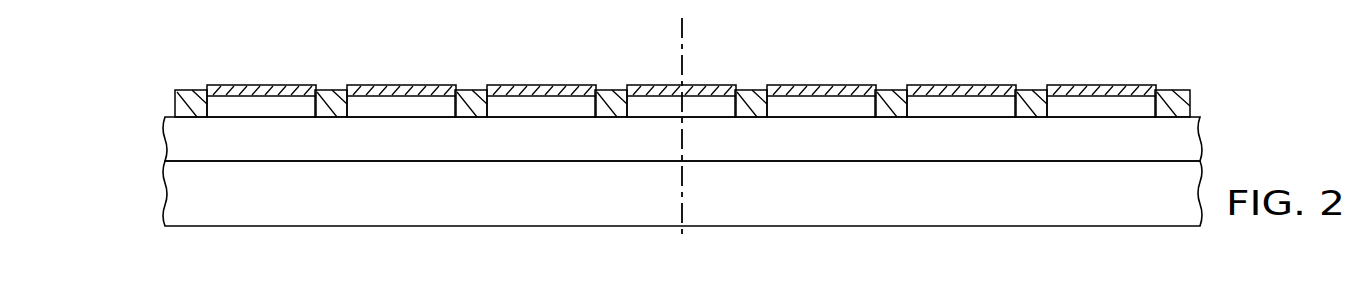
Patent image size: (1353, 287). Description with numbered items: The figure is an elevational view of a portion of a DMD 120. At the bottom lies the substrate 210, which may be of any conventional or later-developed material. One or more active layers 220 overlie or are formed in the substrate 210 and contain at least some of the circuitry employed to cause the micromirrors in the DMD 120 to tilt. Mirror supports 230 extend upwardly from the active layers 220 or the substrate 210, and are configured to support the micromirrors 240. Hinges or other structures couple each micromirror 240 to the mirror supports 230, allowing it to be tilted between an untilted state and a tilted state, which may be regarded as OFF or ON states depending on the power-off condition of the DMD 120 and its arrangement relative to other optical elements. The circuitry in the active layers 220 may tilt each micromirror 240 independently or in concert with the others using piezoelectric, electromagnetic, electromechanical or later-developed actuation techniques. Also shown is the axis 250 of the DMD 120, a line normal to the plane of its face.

The DMD 120 is at (616, 46).
The substrate 210 is at (165, 198).
The active layers 220 is at (165, 135).
The mirror support 230 is at (330, 98).
The micromirror 240 is at (253, 86).
The axis 250 is at (683, 35).